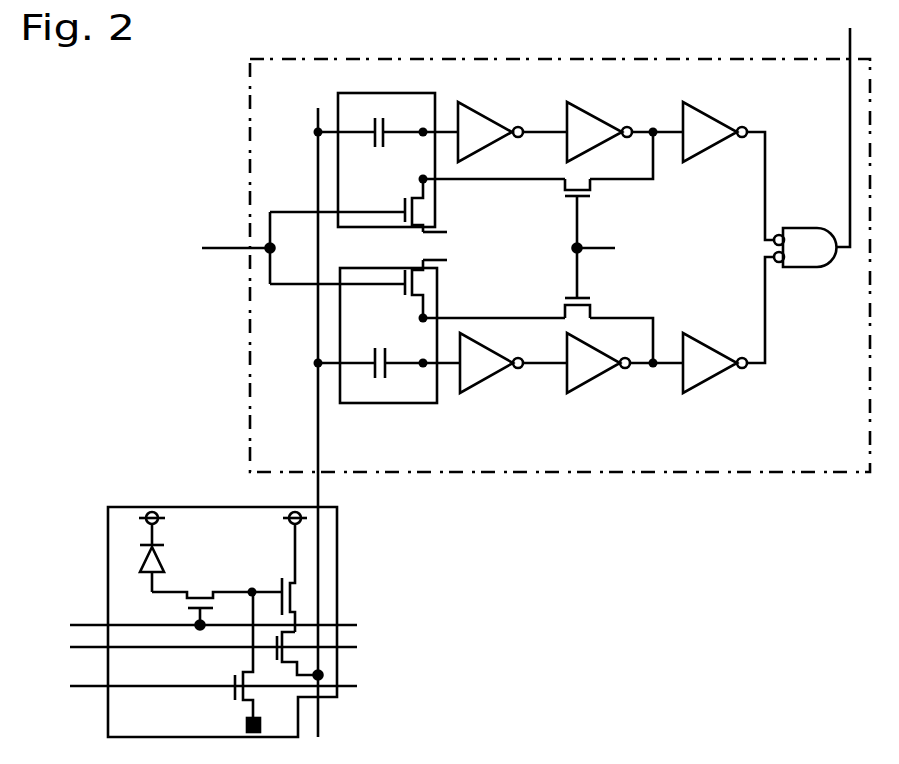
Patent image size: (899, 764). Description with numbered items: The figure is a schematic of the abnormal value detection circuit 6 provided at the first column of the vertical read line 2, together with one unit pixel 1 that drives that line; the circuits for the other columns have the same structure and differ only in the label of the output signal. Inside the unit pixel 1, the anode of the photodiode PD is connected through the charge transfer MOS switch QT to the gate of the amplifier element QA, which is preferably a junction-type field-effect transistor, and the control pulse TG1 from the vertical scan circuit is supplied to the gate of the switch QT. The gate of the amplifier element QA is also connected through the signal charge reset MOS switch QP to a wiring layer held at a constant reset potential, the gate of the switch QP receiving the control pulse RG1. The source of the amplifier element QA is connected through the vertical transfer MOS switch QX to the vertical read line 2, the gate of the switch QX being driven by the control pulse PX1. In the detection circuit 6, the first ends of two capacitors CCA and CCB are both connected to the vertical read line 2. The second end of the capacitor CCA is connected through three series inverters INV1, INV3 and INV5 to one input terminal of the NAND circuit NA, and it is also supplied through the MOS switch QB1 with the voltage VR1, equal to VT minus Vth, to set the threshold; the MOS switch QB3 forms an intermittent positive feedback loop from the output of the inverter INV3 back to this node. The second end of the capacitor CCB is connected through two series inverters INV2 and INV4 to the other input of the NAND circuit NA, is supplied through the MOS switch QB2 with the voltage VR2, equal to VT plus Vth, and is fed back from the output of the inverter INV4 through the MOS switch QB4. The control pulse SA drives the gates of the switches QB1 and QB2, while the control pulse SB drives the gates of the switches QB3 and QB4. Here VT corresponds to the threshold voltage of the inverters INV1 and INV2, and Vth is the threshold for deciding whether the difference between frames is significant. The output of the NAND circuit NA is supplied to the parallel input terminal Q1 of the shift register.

The unit pixel 1 is at (337, 551).
The vertical read line 2 is at (320, 488).
The abnormal value detection circuit 6 is at (542, 59).
The parallel input terminal Q1 is at (848, 127).
The capacitor CCA is at (378, 108).
The capacitor CCB is at (380, 404).
The inverter INV1 is at (494, 135).
The inverter INV2 is at (496, 368).
The inverter INV3 is at (604, 135).
The inverter INV4 is at (604, 368).
The inverter INV5 is at (719, 135).
The NAND circuit NA is at (805, 236).
The MOS switch QB1 is at (405, 204).
The MOS switch QB2 is at (405, 292).
The MOS switch QB3 is at (597, 206).
The MOS switch QB4 is at (597, 288).
The control pulse φ SA is at (303, 248).
The control pulse φ SB is at (612, 251).
The voltage VR1 is at (479, 240).
The voltage VR2 is at (489, 265).
The photodiode PD is at (167, 552).
The charge transfer MOS switch QT is at (213, 603).
The amplifier element QA is at (277, 572).
The vertical transfer MOS switch QX is at (290, 659).
The signal charge reset MOS switch QP is at (246, 662).
The control pulse φ TG1 is at (187, 625).
The control pulse φ PX1 is at (187, 647).
The control pulse φ RG1 is at (187, 686).